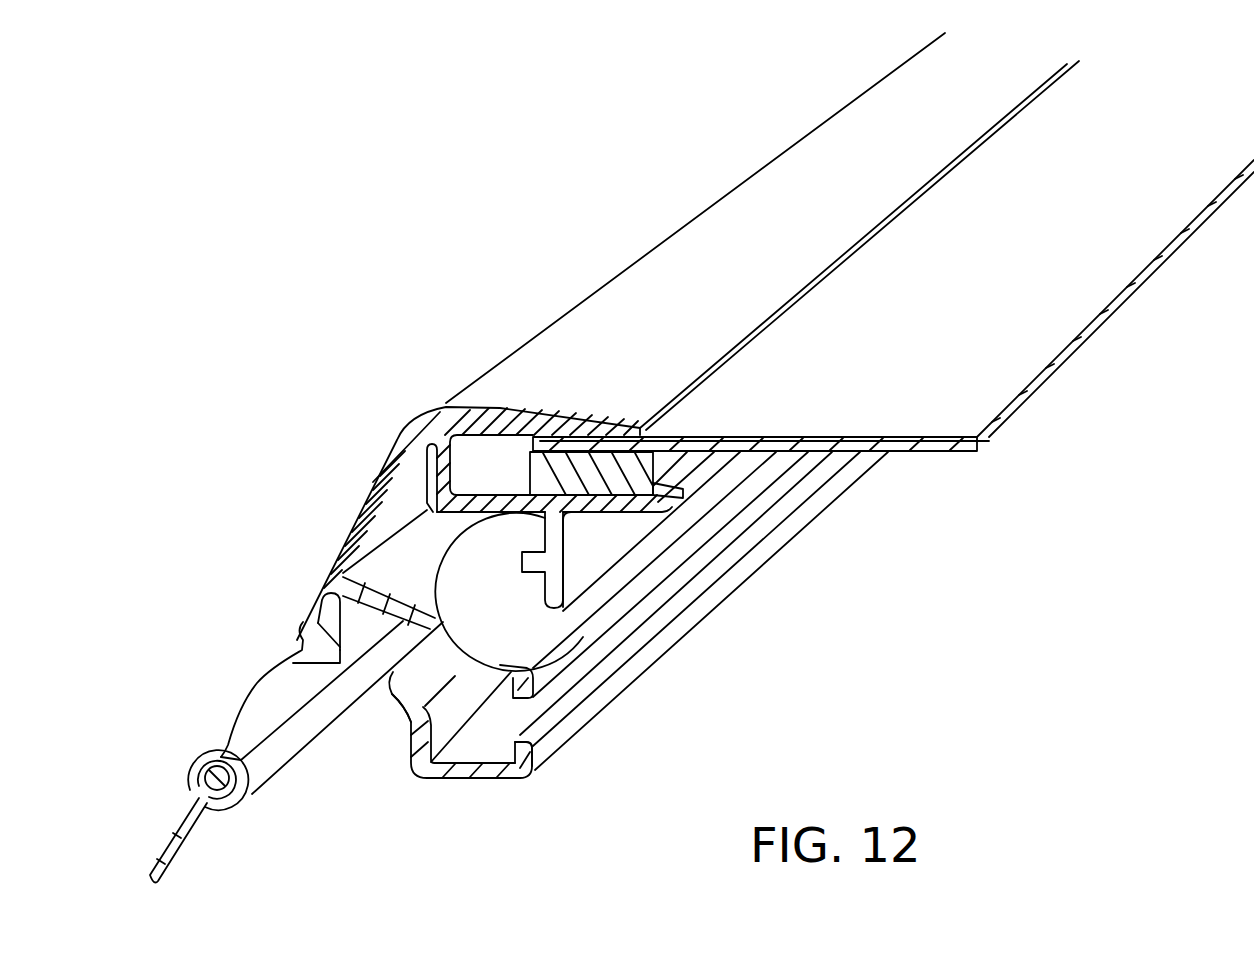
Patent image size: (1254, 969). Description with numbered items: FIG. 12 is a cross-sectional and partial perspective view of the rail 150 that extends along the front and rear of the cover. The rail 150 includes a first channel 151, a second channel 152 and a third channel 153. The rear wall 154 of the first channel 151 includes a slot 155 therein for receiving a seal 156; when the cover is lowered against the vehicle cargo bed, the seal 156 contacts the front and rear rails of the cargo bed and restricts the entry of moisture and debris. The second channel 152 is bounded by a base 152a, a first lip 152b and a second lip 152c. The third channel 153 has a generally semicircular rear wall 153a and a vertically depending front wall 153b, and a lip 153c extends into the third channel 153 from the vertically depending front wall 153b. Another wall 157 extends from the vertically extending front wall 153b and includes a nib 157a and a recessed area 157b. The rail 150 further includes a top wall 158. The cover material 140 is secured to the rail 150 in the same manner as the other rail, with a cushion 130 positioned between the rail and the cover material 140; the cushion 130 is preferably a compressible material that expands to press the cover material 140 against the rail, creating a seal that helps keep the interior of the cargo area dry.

The cushion 130 is at (543, 468).
The cover material 140 is at (1010, 345).
The rail 150 is at (268, 628).
The first channel 151 is at (372, 712).
The second channel 152 is at (500, 727).
The base 152a is at (467, 780).
The first lip 152b is at (527, 752).
The second lip 152c is at (545, 678).
The third channel 153 is at (528, 613).
The semicircular rear wall 153a is at (403, 714).
The vertically depending front wall 153b is at (602, 552).
The lip 153c is at (470, 568).
The rear wall 154 is at (245, 715).
The slot 155 is at (203, 776).
The seal 156 is at (205, 845).
The wall 157 is at (683, 508).
The nib 157a is at (700, 465).
The recessed area 157b is at (677, 492).
The top wall 158 is at (622, 308).